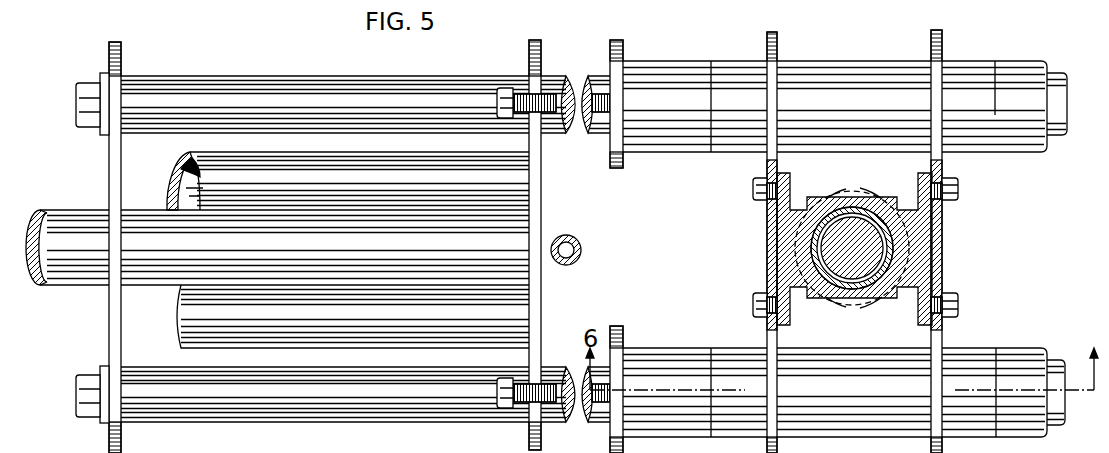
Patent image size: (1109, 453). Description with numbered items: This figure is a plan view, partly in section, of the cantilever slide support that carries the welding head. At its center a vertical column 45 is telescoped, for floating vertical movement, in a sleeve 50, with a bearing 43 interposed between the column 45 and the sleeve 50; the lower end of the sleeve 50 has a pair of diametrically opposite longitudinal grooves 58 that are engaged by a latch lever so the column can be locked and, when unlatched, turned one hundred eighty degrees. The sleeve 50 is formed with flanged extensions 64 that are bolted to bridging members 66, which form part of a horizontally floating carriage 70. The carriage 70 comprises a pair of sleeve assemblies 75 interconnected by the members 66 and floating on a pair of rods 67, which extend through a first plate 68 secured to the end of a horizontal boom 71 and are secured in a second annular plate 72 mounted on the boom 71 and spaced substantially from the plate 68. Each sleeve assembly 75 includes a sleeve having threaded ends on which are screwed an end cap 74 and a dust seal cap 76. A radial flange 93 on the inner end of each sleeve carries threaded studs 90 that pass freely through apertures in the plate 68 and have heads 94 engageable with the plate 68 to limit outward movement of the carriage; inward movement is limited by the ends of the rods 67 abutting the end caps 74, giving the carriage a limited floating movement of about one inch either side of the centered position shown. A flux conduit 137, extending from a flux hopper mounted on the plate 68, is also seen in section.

The bearing 43 is at (889, 241).
The vertical column 45 is at (868, 258).
The sleeve 50 is at (837, 200).
The longitudinally extending grooves 58 is at (857, 310).
The flanged extensions 64 is at (789, 207).
The bridging members 66 is at (772, 343).
The rods 67 is at (546, 75).
The first plate 68 is at (534, 212).
The horizontally floating carriage 70 is at (833, 50).
The horizontal boom 71 is at (397, 323).
The second annular plate 72 is at (122, 58).
The end cap 74 is at (1020, 70).
The sleeve assembly 75 is at (884, 112).
The dust seal cap 76 is at (661, 68).
The studs 90 is at (551, 112).
The radial flange 93 is at (348, 410).
The heads 94 is at (501, 92).
The flux conduit 137 is at (582, 250).